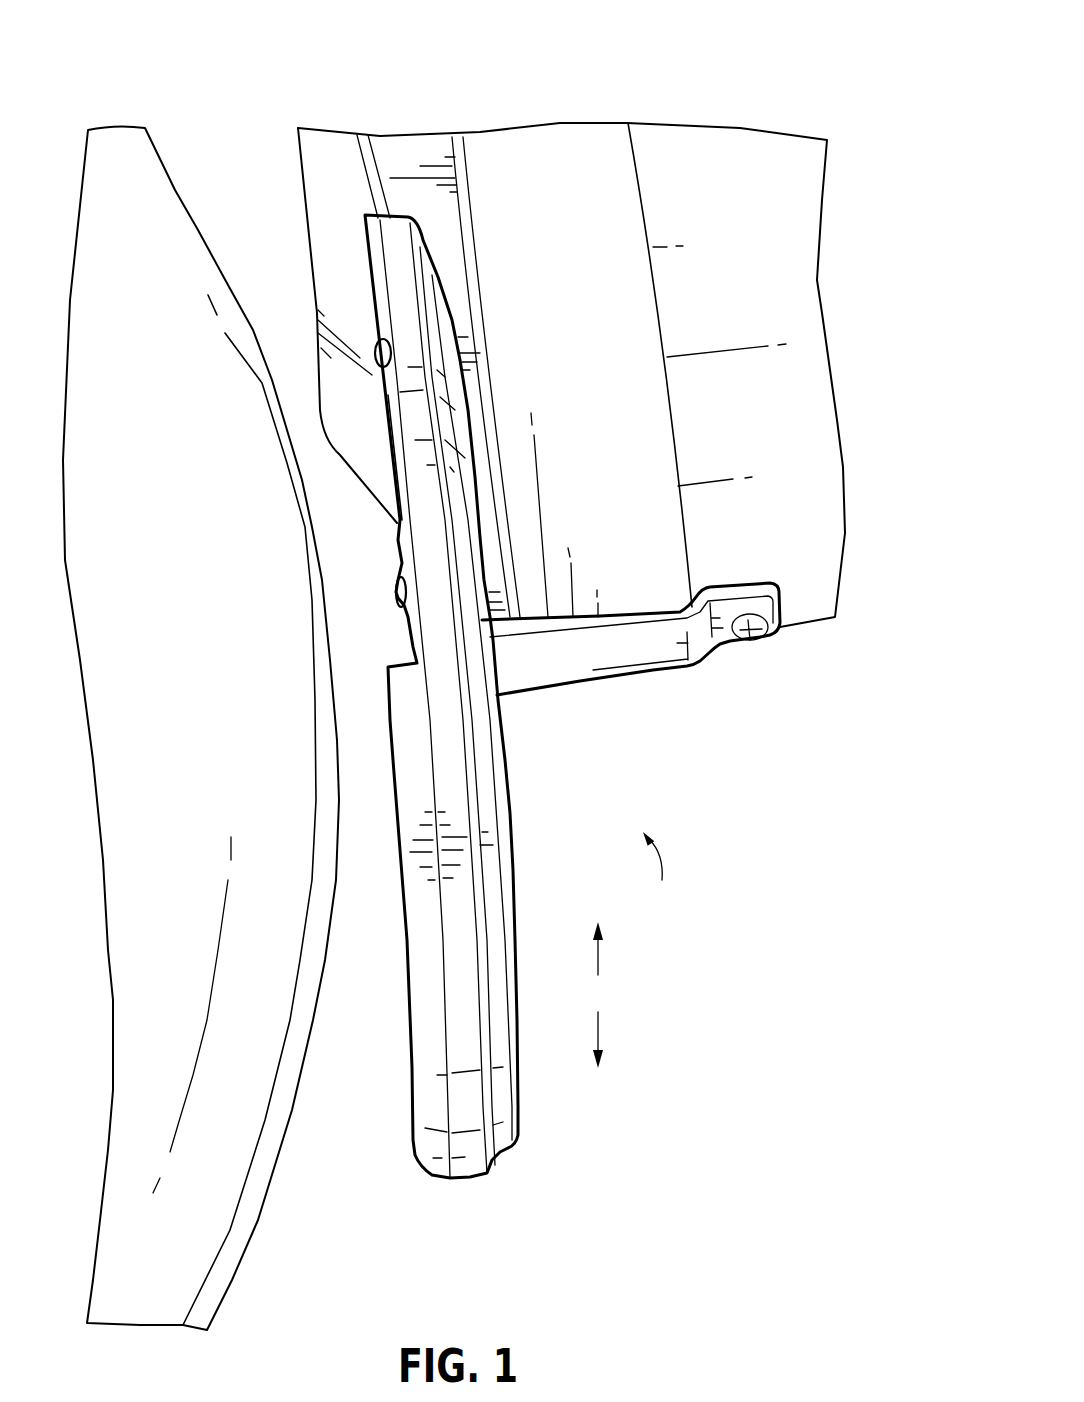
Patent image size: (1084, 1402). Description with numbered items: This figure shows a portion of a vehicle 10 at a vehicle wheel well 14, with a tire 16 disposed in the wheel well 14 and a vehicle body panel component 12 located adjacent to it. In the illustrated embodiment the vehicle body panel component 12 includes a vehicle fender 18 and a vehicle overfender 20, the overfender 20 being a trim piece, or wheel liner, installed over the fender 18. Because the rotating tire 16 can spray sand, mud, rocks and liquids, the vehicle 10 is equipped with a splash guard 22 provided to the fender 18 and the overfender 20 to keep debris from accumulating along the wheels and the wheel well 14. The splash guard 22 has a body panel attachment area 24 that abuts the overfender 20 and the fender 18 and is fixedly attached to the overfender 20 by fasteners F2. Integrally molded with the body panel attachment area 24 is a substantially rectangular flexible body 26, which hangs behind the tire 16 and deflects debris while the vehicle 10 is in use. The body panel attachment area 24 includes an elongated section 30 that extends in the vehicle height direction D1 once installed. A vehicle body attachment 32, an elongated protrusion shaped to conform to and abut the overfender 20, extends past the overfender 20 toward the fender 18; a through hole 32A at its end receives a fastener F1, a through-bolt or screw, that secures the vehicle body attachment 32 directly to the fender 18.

The vehicle 10 is at (668, 40).
The vehicle body panel component 12 is at (632, 108).
The vehicle wheel well 14 is at (229, 138).
The tire 16 is at (77, 188).
The vehicle fender 18 is at (807, 623).
The vehicle overfender 20 is at (673, 418).
The splash guard 22 is at (660, 870).
The body panel attachment area 24 is at (441, 244).
The flexible body 26 is at (398, 1017).
The elongated section 30 is at (387, 407).
The vehicle body attachment 32 is at (568, 686).
The through hole 32A is at (738, 614).
The fastener F1 is at (753, 641).
The fastener F2 is at (375, 348).
The vehicle height direction D1 is at (600, 995).